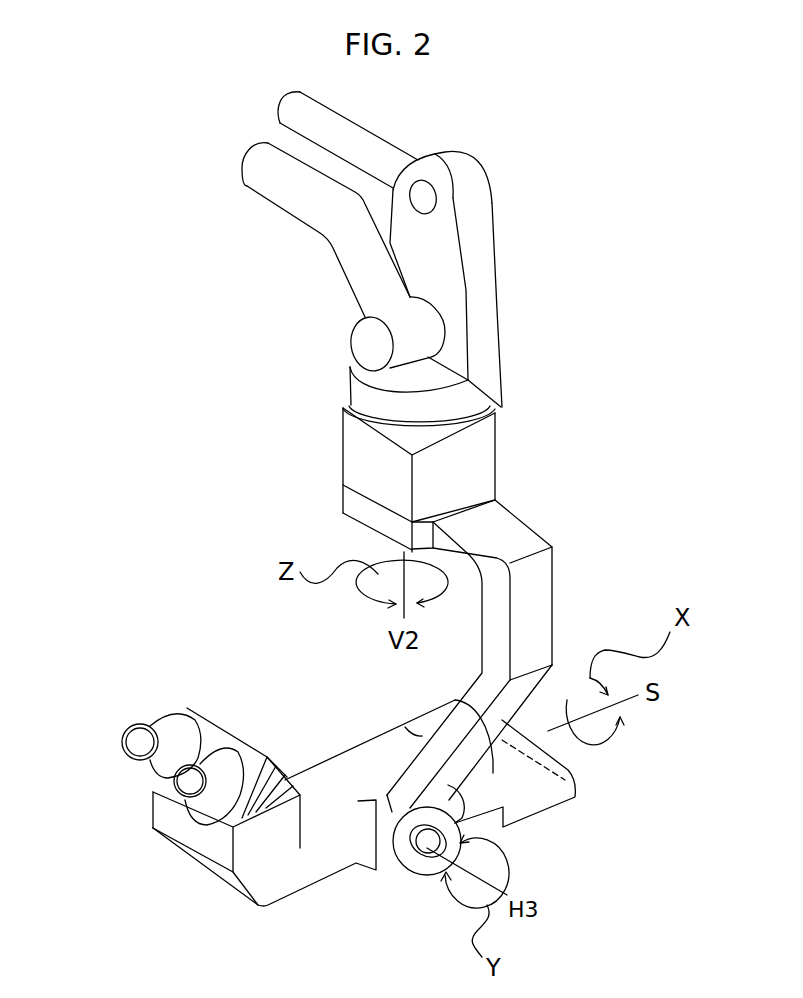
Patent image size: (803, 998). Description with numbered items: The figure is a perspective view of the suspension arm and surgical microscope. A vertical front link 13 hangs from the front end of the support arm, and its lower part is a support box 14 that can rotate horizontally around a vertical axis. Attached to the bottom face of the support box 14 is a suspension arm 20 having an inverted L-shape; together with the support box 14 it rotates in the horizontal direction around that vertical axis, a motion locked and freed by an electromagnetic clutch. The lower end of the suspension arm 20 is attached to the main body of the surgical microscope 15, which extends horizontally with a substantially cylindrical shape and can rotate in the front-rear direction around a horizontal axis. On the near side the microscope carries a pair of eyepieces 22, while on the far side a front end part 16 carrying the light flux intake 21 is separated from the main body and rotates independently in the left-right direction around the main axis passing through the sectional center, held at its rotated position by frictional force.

The front link 13 is at (498, 290).
The support box 14 is at (342, 467).
The surgical microscope 15 is at (328, 850).
The front end part 16 is at (455, 703).
The suspension arm 20 is at (557, 593).
The light flux intake 21 is at (553, 806).
The eyepieces 22 is at (190, 782).